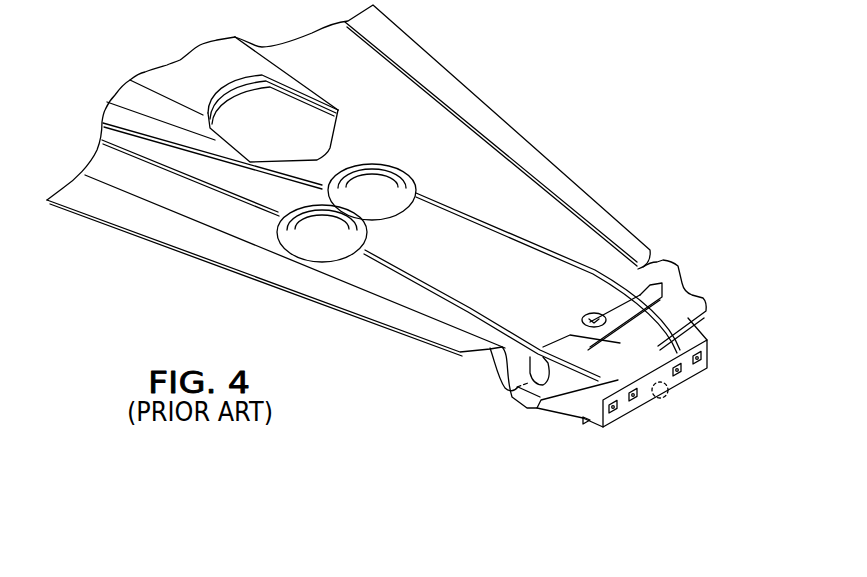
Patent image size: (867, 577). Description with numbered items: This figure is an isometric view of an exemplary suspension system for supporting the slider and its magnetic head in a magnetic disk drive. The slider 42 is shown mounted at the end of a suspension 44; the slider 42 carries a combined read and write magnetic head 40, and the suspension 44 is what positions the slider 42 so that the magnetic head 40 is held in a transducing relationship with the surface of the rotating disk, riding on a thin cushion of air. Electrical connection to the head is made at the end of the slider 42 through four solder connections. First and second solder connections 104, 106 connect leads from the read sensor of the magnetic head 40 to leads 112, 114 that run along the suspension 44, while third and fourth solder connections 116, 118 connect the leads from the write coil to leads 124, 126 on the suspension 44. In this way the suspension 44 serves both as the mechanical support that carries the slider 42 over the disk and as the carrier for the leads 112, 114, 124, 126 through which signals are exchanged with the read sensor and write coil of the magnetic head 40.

The magnetic head 40 is at (670, 403).
The slider 42 is at (553, 413).
The suspension 44 is at (513, 125).
The first solder connection 104 is at (613, 407).
The second solder connection 106 is at (707, 357).
The lead 112 is at (392, 270).
The lead 114 is at (570, 257).
The third solder connection 116 is at (627, 400).
The fourth solder connection 118 is at (683, 373).
The lead 124 is at (435, 287).
The lead 126 is at (490, 222).